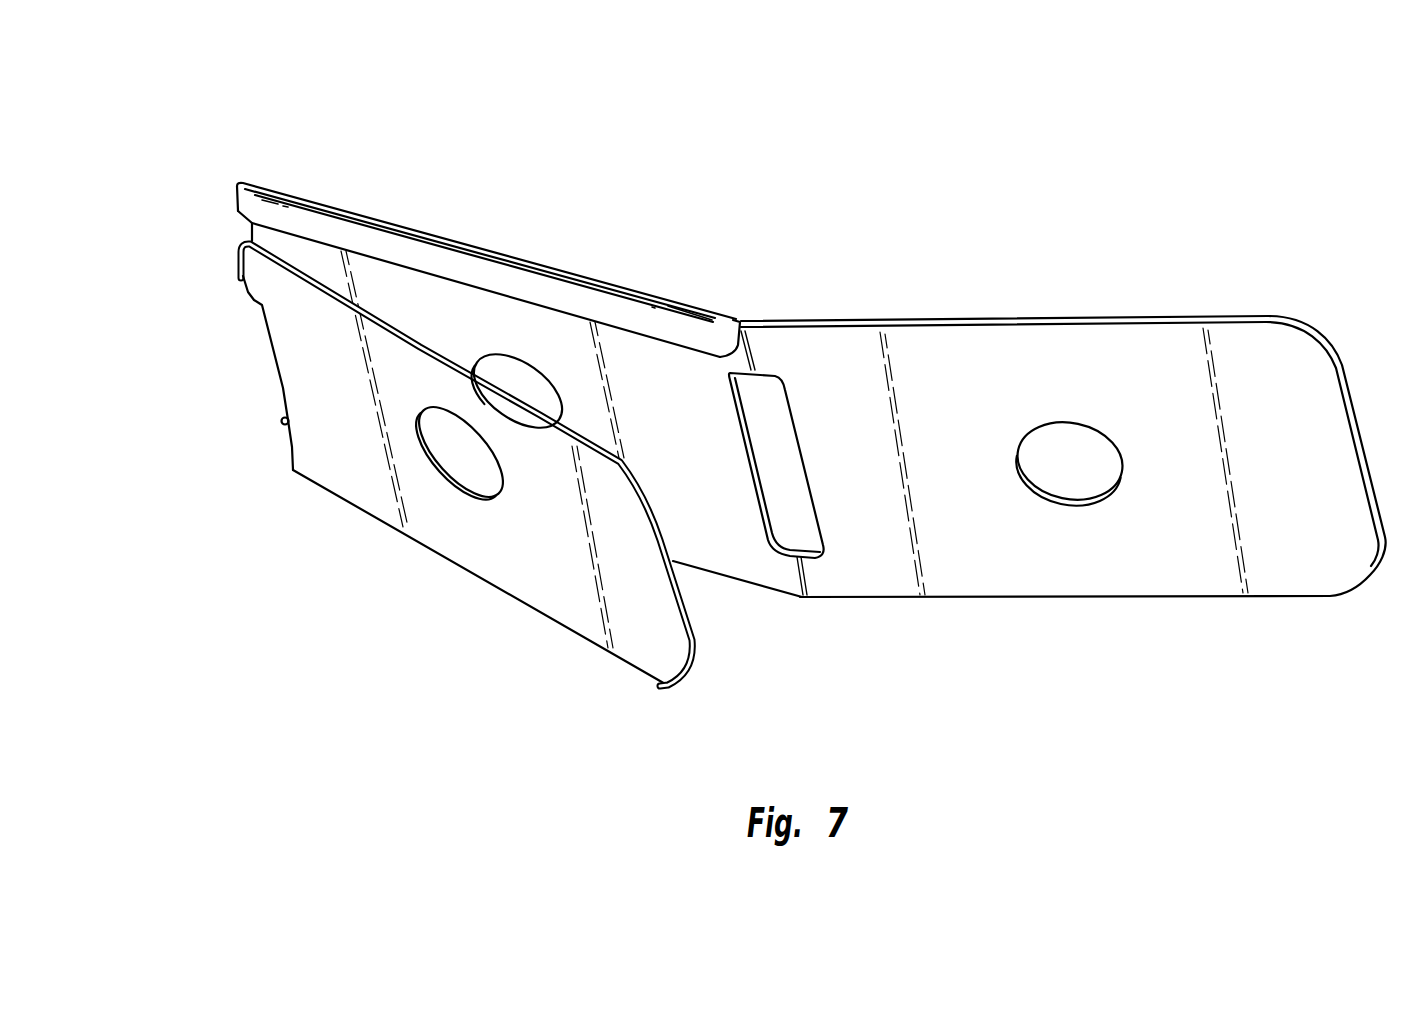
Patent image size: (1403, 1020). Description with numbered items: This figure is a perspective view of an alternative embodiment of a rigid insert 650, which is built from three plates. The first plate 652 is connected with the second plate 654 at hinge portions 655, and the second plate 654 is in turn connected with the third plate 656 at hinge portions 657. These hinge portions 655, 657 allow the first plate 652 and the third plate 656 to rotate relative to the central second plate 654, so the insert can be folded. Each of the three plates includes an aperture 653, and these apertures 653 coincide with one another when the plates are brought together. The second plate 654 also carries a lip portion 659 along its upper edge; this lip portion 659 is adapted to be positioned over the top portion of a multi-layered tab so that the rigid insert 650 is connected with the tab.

The rigid insert 650 is at (1010, 198).
The first plate 652 is at (577, 607).
The aperture 653 is at (470, 462).
The second plate 654 is at (745, 562).
The hinge portions 655 is at (245, 276).
The third plate 656 is at (1197, 567).
The hinge portions 657 is at (757, 347).
The lip portion 659 is at (473, 262).